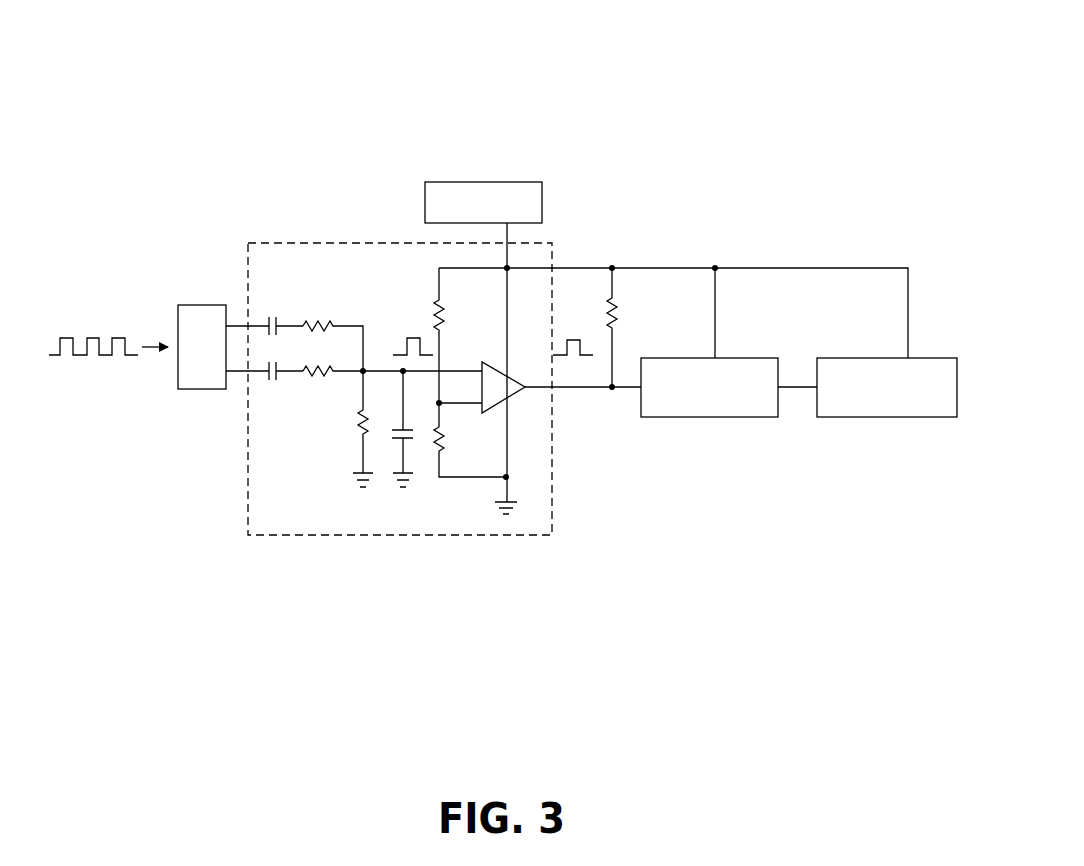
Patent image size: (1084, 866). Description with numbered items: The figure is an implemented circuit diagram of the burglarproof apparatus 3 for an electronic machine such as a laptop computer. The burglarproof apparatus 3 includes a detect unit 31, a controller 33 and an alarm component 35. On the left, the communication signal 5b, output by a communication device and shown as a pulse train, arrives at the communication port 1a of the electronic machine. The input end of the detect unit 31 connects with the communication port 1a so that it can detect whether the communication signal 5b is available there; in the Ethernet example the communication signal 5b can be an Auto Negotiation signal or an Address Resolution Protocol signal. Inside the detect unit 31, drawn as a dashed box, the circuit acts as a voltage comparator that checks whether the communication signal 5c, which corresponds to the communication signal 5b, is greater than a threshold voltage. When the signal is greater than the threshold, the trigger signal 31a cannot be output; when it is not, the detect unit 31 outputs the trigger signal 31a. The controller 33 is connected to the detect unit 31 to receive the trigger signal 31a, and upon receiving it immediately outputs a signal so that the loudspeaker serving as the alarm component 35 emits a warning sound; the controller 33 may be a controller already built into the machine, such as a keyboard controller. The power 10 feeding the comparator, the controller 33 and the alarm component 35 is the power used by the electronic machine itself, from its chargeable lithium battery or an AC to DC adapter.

The burglarproof apparatus 3 is at (738, 137).
The communication signal 5b is at (93, 342).
The communication port 1a is at (202, 382).
The detect unit 31 is at (389, 434).
The communication signal 5c is at (413, 338).
The power 10 is at (512, 187).
The trigger signal 31a is at (575, 355).
The controller 33 is at (723, 402).
The alarm component 35 is at (918, 413).